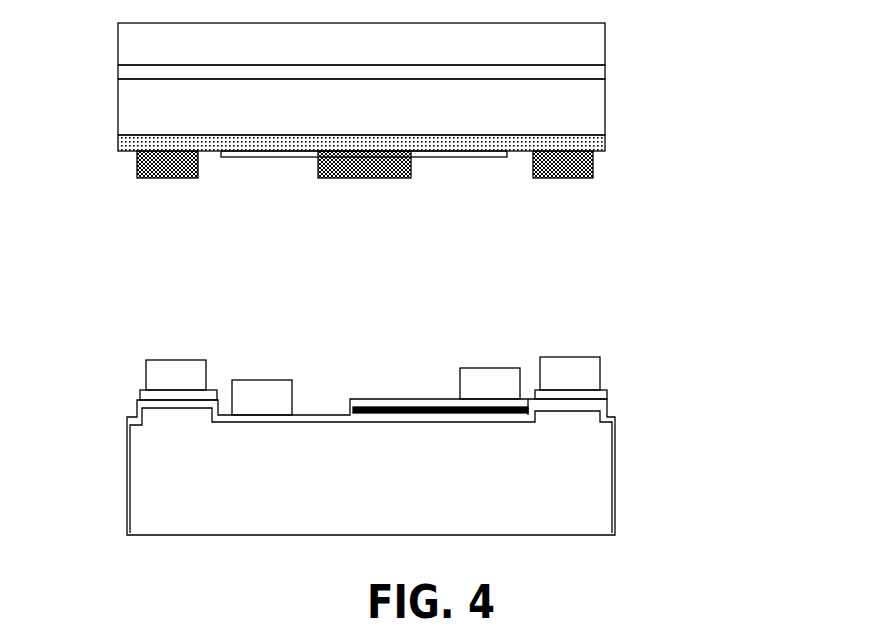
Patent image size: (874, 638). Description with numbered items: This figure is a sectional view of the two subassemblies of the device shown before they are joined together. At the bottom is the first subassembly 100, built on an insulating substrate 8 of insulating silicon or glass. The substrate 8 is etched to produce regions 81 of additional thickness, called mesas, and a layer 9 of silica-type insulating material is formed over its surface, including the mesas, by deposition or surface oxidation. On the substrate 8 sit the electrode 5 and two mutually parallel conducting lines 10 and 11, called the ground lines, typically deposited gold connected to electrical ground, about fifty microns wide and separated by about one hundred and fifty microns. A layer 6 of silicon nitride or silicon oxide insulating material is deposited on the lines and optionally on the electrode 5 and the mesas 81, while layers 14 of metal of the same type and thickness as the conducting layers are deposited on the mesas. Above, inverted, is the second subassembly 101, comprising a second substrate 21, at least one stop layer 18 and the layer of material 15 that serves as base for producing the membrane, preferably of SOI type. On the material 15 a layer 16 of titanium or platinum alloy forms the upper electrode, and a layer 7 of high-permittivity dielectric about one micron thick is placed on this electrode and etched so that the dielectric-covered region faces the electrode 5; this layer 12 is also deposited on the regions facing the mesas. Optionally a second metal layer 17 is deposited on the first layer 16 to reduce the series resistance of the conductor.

The electrode 5 is at (423, 403).
The layer of insulating material 6 is at (605, 387).
The layer of high-permittivity dielectric 7 is at (365, 178).
The insulating substrate 8 is at (615, 500).
The layer of insulating material 9 is at (608, 412).
The conducting line 10 is at (487, 368).
The conducting line 11 is at (260, 380).
The layer 12 is at (162, 178).
The layer of metal 14 is at (177, 380).
The layer of material 15 is at (578, 100).
The layer 16 is at (560, 146).
The second metal layer 17 is at (475, 158).
The stop layer 18 is at (170, 73).
The second substrate 21 is at (170, 52).
The regions of additional thickness 81 is at (152, 488).
The first subassembly 100 is at (438, 430).
The second subassembly 101 is at (433, 122).